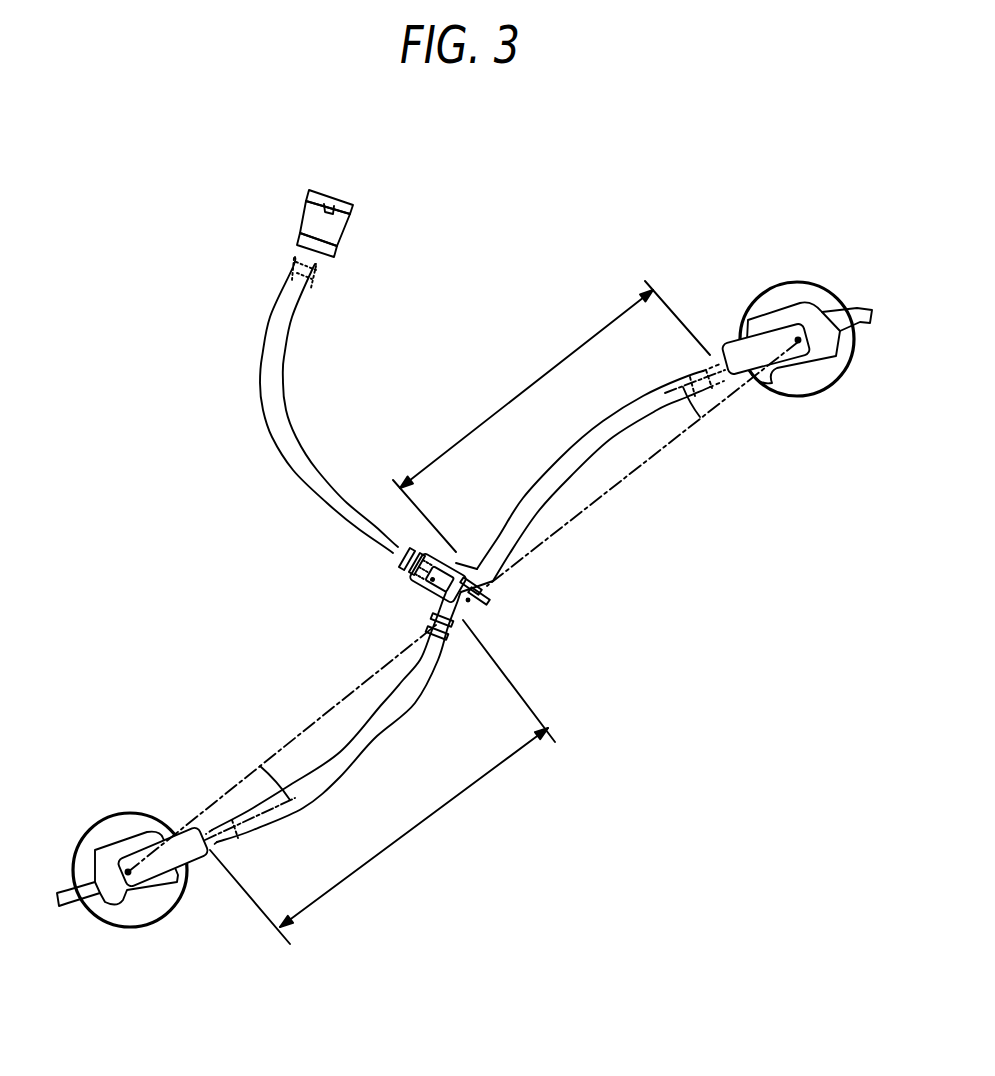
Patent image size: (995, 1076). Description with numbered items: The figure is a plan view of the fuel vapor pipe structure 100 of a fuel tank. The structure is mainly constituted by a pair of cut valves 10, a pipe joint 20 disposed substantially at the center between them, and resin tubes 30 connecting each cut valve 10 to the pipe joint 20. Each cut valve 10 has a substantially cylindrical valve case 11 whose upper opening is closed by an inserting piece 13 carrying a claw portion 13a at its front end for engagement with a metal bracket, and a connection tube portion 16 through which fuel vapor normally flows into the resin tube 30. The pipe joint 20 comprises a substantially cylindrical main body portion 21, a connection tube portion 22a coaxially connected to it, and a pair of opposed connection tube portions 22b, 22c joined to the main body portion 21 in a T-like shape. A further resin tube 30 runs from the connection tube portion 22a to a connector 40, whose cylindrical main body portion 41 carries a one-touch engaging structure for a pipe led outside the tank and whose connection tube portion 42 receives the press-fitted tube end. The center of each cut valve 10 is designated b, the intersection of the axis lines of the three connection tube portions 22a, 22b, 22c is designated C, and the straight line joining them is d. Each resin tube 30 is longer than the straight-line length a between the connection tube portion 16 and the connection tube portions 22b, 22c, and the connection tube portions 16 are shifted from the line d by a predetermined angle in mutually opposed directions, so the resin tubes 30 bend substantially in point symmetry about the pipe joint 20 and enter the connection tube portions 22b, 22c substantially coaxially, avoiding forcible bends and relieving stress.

The fuel vapor pipe structure 100 is at (556, 236).
The cut valve 10 is at (452, 611).
The valve case 11 is at (827, 380).
The inserting piece 13 is at (778, 323).
The claw portion 13a is at (862, 308).
The connection tube portion 16 is at (707, 382).
The pipe joint 20 is at (446, 608).
The main body portion 21 is at (430, 602).
The connection tube portion 22a is at (397, 563).
The connection tube portion 22b is at (458, 625).
The connection tube portion 22c is at (487, 592).
The resin tube 30 is at (286, 420).
The connector 40 is at (346, 253).
The main body portion 41 is at (307, 223).
The connection tube portion 42 is at (312, 272).
The length a is at (460, 612).
The center of the cut valve b is at (798, 343).
The intersection C is at (473, 610).
The straight line d is at (630, 470).